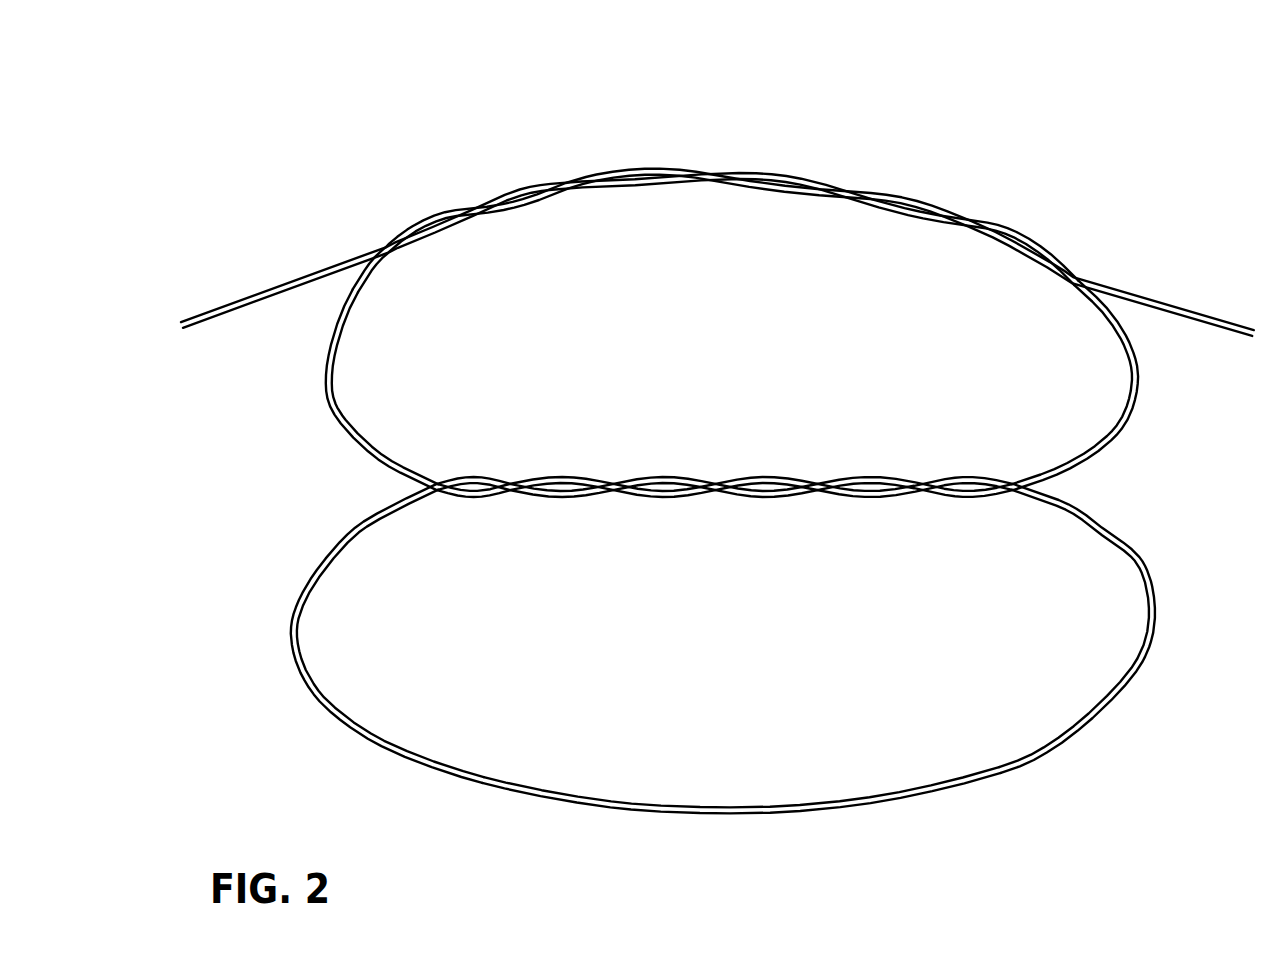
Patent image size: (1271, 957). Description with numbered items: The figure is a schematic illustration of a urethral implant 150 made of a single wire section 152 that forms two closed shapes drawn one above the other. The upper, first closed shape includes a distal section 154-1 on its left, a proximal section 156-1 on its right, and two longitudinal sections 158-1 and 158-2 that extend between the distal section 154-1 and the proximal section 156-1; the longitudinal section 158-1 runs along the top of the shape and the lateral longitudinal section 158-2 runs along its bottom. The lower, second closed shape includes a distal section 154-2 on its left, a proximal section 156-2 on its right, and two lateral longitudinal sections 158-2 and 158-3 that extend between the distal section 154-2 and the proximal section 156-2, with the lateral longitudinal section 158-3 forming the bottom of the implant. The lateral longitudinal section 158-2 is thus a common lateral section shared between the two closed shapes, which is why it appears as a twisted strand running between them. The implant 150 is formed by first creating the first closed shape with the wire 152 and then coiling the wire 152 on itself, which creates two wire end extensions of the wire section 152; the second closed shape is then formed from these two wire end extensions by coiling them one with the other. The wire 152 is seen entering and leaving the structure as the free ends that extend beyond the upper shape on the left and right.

The urethral implant 150 is at (345, 57).
The wire section 152 is at (258, 293).
The distal section 154-1 is at (323, 379).
The proximal section 156-1 is at (1140, 378).
The longitudinal section 158-1 is at (723, 176).
The lateral longitudinal section 158-2 is at (762, 480).
The distal section 154-2 is at (292, 640).
The proximal section 156-2 is at (1157, 616).
The lateral longitudinal section 158-3 is at (762, 817).